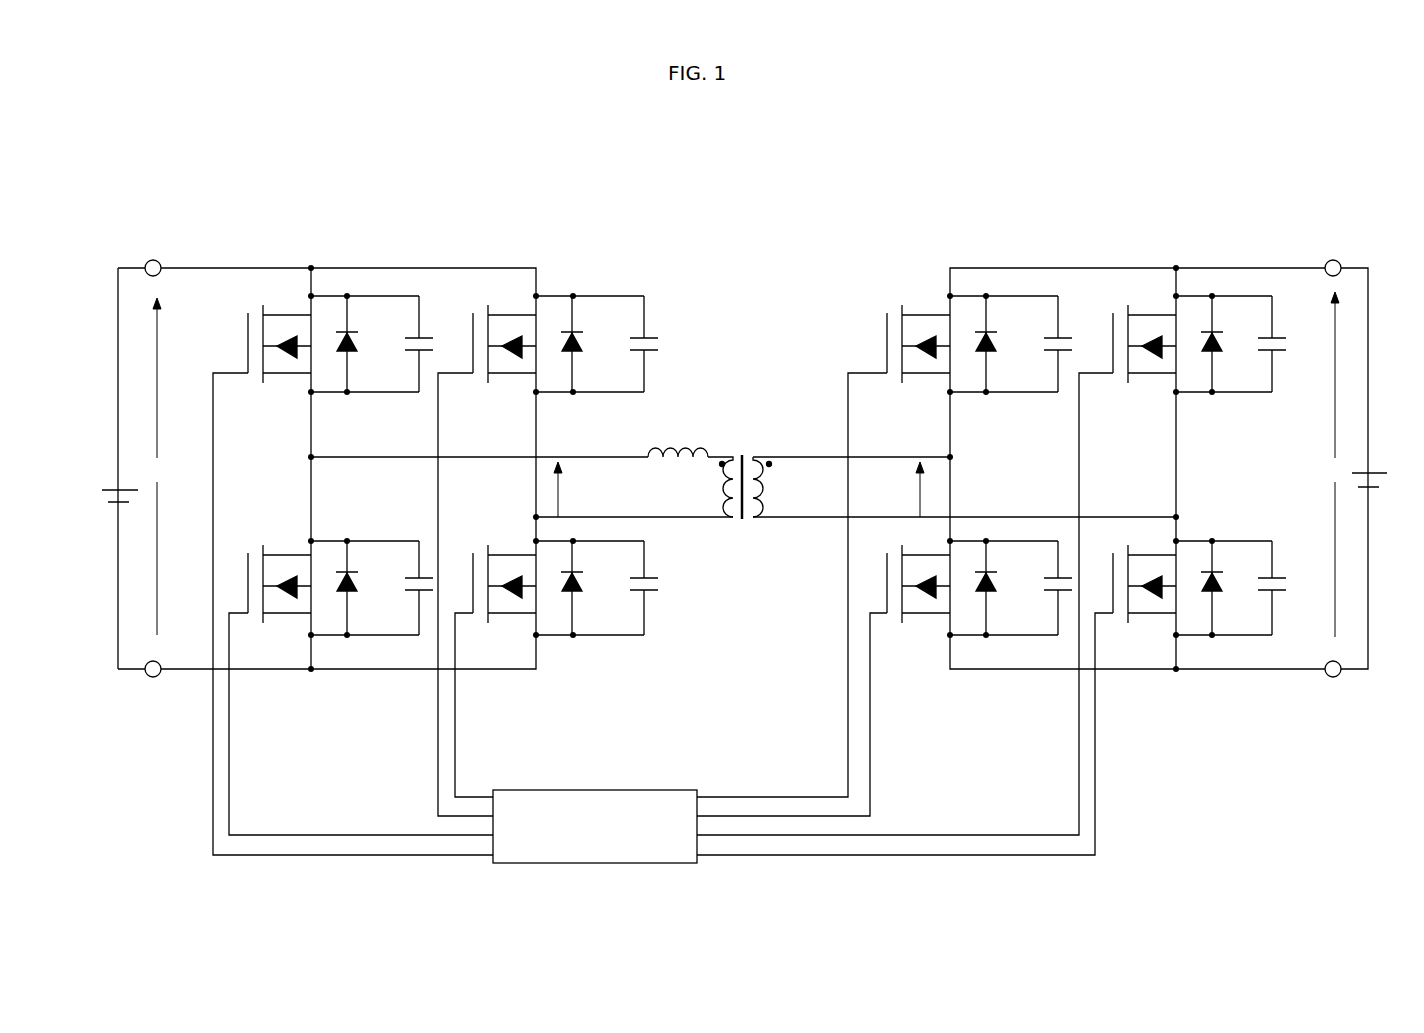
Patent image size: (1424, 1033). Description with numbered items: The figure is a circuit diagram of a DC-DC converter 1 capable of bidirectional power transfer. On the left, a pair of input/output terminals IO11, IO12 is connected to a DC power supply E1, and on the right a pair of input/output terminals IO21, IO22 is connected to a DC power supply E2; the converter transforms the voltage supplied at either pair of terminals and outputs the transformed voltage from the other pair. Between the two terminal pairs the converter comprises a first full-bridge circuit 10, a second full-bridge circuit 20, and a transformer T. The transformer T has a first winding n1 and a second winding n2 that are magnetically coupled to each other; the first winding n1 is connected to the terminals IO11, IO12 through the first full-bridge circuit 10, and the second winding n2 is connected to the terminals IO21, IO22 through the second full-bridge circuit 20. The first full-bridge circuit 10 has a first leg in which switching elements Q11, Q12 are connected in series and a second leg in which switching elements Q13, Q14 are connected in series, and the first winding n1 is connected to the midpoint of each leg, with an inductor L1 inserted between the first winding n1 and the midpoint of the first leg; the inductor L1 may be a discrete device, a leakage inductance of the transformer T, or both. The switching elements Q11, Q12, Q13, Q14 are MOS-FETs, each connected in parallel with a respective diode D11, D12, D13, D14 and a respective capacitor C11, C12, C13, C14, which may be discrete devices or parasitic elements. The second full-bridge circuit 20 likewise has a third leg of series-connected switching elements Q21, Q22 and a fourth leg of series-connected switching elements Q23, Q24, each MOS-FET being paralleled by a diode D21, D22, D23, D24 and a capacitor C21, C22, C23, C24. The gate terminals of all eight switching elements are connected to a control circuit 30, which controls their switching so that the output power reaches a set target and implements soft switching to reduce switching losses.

The DC-DC converter 1 is at (138, 150).
The first full-bridge circuit 10 is at (355, 232).
The second full-bridge circuit 20 is at (1192, 232).
The control circuit 30 is at (688, 790).
The switching element Q11 is at (353, 568).
The switching element Q12 is at (361, 675).
The switching element Q13 is at (487, 548).
The switching element Q14 is at (495, 656).
The switching element Q21 is at (823, 539).
The switching element Q22 is at (823, 678).
The switching element Q23 is at (936, 558).
The switching element Q24 is at (936, 698).
The diode D11 is at (365, 344).
The diode D12 is at (365, 588).
The diode D13 is at (590, 344).
The diode D14 is at (590, 588).
The diode D21 is at (1004, 344).
The diode D22 is at (1004, 588).
The diode D23 is at (1229, 344).
The diode D24 is at (1229, 588).
The capacitor C11 is at (401, 344).
The capacitor C12 is at (401, 588).
The capacitor C13 is at (662, 344).
The capacitor C14 is at (662, 588).
The capacitor C21 is at (1044, 344).
The capacitor C22 is at (1044, 588).
The capacitor C23 is at (1287, 344).
The capacitor C24 is at (1287, 588).
The input/output terminal IO11 is at (158, 251).
The input/output terminal IO12 is at (158, 687).
The input/output terminal IO21 is at (1341, 251).
The input/output terminal IO22 is at (1341, 687).
The DC power supply E1 is at (110, 480).
The DC power supply E2 is at (1378, 472).
The inductor L1 is at (678, 437).
The transformer T is at (742, 472).
The first winding n1 is at (709, 487).
The second winding n2 is at (776, 487).